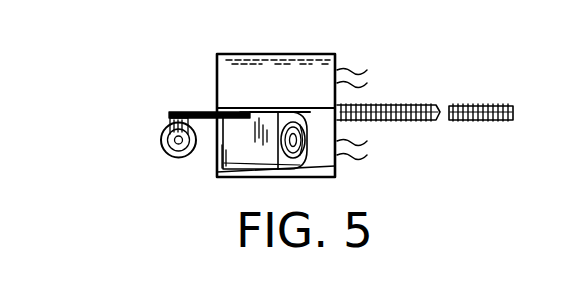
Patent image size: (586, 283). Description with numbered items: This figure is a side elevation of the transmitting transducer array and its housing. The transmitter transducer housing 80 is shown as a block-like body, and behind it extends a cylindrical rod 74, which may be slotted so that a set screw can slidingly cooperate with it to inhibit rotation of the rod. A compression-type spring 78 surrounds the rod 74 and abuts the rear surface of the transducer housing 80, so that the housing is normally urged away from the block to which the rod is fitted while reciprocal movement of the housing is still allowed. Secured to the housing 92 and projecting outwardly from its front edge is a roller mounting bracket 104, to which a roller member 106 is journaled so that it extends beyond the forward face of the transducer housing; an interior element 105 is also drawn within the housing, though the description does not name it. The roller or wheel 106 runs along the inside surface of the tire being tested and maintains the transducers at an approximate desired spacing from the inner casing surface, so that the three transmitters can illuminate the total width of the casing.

The cylindrical rod 74 is at (513, 115).
The compression-type spring 78 is at (400, 103).
The transmitter transducer housing 80 is at (278, 52).
The housing 92 is at (291, 95).
The roller mounting bracket 104 is at (200, 113).
The roller 105 is at (263, 157).
The roller member 106 is at (163, 130).